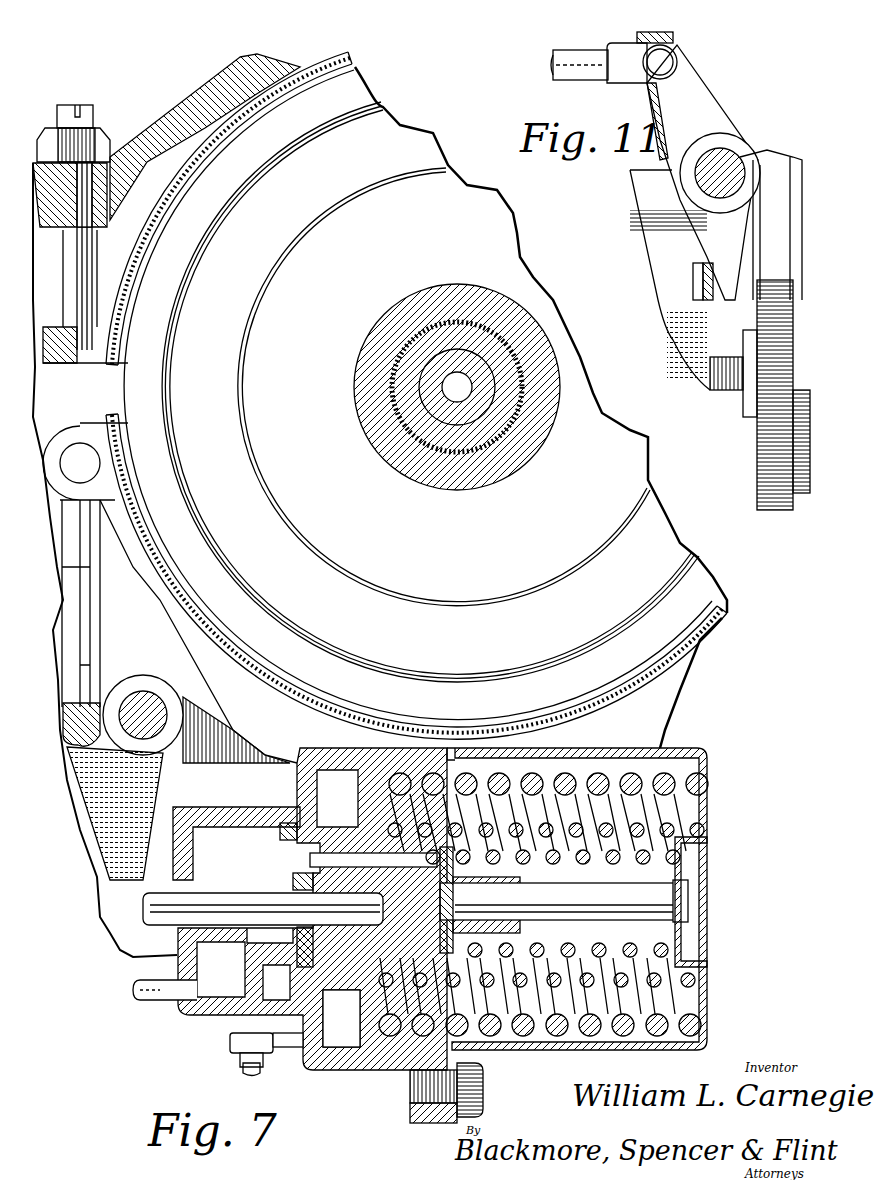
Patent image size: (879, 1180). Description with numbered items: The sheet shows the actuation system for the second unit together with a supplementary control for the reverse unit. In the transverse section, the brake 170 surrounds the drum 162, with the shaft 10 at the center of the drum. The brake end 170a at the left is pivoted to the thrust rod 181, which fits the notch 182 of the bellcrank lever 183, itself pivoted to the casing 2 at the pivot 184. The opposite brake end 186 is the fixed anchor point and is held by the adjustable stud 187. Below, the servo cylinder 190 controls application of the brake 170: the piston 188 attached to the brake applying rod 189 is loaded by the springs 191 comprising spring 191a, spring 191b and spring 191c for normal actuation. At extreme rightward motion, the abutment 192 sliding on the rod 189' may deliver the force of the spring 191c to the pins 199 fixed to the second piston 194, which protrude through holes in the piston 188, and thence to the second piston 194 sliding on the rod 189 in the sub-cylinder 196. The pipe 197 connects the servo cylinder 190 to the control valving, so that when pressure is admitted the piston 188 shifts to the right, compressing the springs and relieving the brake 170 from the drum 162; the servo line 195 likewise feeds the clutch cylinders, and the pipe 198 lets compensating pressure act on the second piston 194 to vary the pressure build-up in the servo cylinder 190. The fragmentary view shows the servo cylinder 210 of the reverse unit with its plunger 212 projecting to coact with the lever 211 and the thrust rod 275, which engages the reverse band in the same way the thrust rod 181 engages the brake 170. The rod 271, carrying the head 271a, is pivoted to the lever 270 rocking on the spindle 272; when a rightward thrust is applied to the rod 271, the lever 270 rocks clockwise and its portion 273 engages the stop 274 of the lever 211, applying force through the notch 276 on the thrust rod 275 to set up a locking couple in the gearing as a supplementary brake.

In FIG. 7, the casing 2 is at (100, 918).
In FIG. 7, the shaft 10 is at (480, 368).
In FIG. 7, the drum 162 is at (703, 585).
In FIG. 7, the brake 170 is at (722, 608).
In FIG. 7, the brake end 170a is at (105, 428).
In FIG. 7, the thrust rod 181 is at (88, 627).
In FIG. 7, the notch 182 is at (72, 703).
In FIG. 7, the bellcrank lever 183 is at (108, 864).
In FIG. 7, the pivot 184 is at (147, 700).
In FIG. 7, the brake end 186 is at (97, 363).
In FIG. 7, the adjustable stud 187 is at (92, 112).
In FIG. 7, the piston 188 is at (370, 1027).
In FIG. 7, the brake applying rod 189 is at (255, 922).
In FIG. 7, the rod 189' is at (711, 889).
In FIG. 7, the servo cylinder 190 is at (336, 762).
In FIG. 7, the springs 191 is at (540, 1046).
In FIG. 7, the spring 191a is at (677, 775).
In FIG. 7, the spring 191b is at (697, 822).
In FIG. 7, the spring 191c is at (668, 952).
In FIG. 7, the abutment 192 is at (510, 880).
In FIG. 7, the second piston 194 is at (262, 862).
In FIG. 7, the servo line 195 is at (260, 1068).
In FIG. 7, the sub-cylinder 196 is at (220, 818).
In FIG. 7, the pipe 197 is at (230, 1040).
In FIG. 7, the pipe 198 is at (150, 980).
In FIG. 7, the pins 199 is at (338, 853).
In FIG. 11, the servo cylinder 210 is at (770, 467).
In FIG. 11, the lever 211 is at (658, 268).
In FIG. 11, the plunger 212 is at (725, 392).
In FIG. 11, the lever 270 is at (700, 100).
In FIG. 11, the rod 271 is at (552, 60).
In FIG. 11, the pin head 271a is at (668, 62).
In FIG. 11, the spindle 272 is at (722, 170).
In FIG. 11, the portion 273 is at (700, 320).
In FIG. 11, the stop 274 is at (690, 297).
In FIG. 11, the thrust rod 275 is at (645, 100).
In FIG. 11, the notch 276 is at (645, 160).